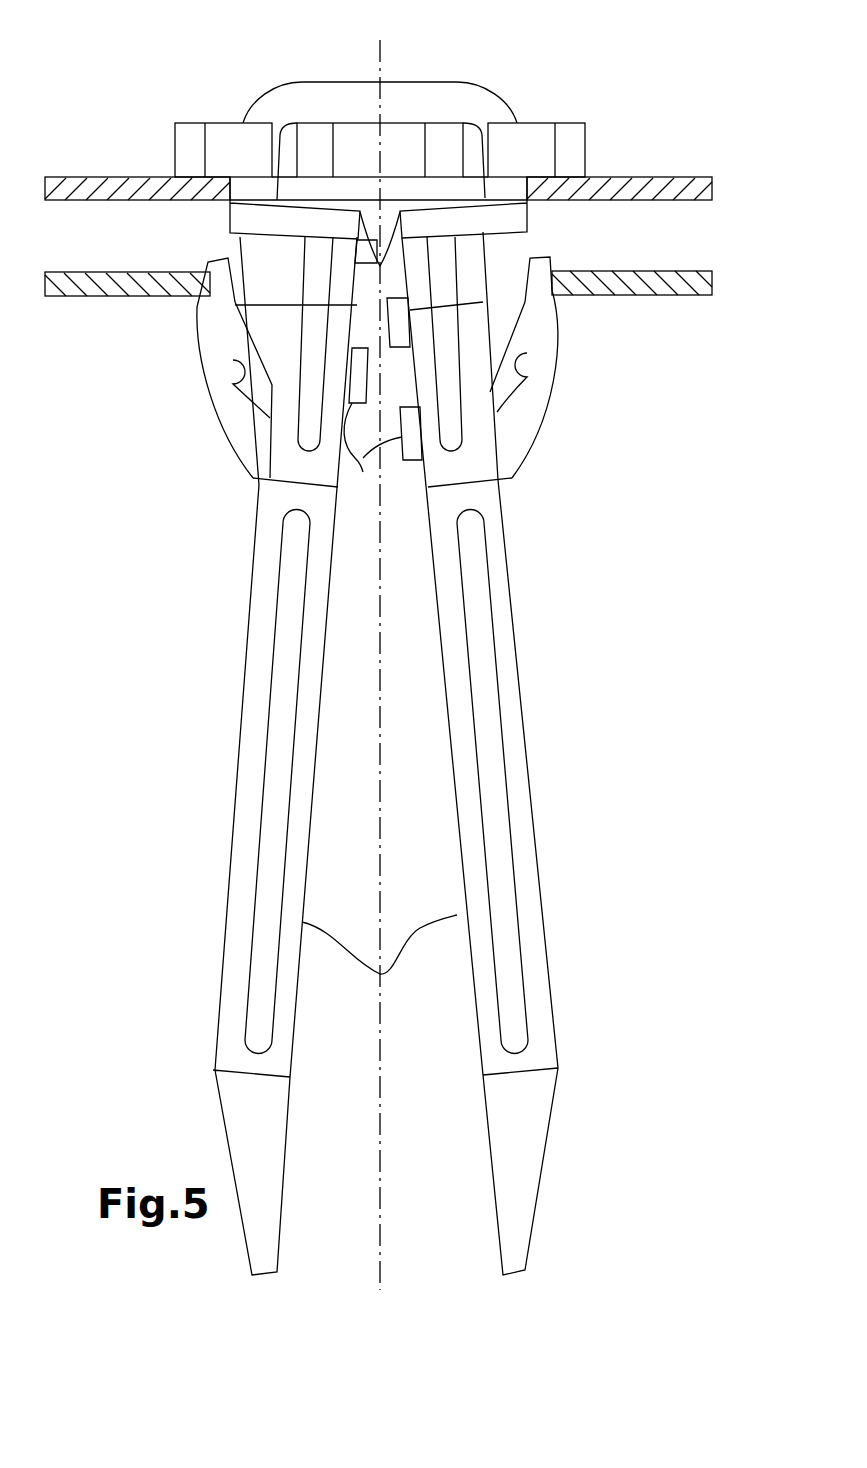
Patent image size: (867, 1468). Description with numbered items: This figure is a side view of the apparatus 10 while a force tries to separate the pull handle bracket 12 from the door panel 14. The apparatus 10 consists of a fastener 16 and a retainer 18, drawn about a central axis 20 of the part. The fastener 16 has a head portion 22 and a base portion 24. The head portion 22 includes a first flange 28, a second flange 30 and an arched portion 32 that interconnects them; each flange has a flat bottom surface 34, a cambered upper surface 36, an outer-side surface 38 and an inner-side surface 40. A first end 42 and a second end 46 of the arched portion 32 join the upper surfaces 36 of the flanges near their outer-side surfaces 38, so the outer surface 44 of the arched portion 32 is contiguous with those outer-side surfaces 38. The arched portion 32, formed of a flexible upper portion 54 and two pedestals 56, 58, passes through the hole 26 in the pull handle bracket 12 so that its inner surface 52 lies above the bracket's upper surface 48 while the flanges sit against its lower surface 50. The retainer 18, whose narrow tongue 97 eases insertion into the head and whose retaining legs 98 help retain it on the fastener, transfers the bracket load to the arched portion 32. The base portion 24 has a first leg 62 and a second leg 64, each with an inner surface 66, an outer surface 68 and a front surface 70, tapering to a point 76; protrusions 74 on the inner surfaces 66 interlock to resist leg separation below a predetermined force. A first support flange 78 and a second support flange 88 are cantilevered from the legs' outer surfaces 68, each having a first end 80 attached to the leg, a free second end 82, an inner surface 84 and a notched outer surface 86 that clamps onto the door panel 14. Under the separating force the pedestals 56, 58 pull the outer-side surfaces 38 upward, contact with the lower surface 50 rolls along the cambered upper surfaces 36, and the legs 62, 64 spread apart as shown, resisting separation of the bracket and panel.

The apparatus 10 is at (292, 62).
The pull handle bracket 12 is at (673, 177).
The door panel 14 is at (655, 296).
The fastener 16 is at (257, 521).
The retainer 18 is at (398, 135).
The longitudinal axis 20 is at (381, 40).
The head portion 22 is at (481, 80).
The base portion 24 is at (506, 539).
The hole 26 is at (320, 183).
The first flange 28 is at (233, 220).
The second flange 30 is at (487, 223).
The arched portion 32 is at (407, 103).
The bottom surface 34 is at (233, 238).
The upper surface 36 is at (320, 207).
The outer-side surface 38 is at (227, 201).
The inner-side surface 40 is at (380, 251).
The first end 42 is at (228, 180).
The outer surface 44 is at (333, 77).
The second end 46 is at (513, 188).
The upper surface 48 is at (710, 176).
The lower surface 50 is at (668, 197).
The inner surface 52 is at (492, 110).
The upper portion 54 is at (357, 103).
The pedestal 56 is at (252, 100).
The pedestal 58 is at (514, 122).
The first leg 62 is at (252, 592).
The second leg 64 is at (524, 683).
The inner surface 66 is at (382, 973).
The outer surface 68 is at (234, 834).
The front surface 70 is at (278, 642).
The protrusions 74 is at (383, 366).
The point 76 is at (263, 1276).
The first support flange 78 is at (221, 406).
The first end 80 is at (258, 462).
The second end 82 is at (199, 313).
The inner surface 84 is at (232, 362).
The outer surface 86 is at (200, 336).
The second support flange 88 is at (550, 406).
The tongue 97 is at (384, 164).
The retaining legs 98 is at (222, 172).